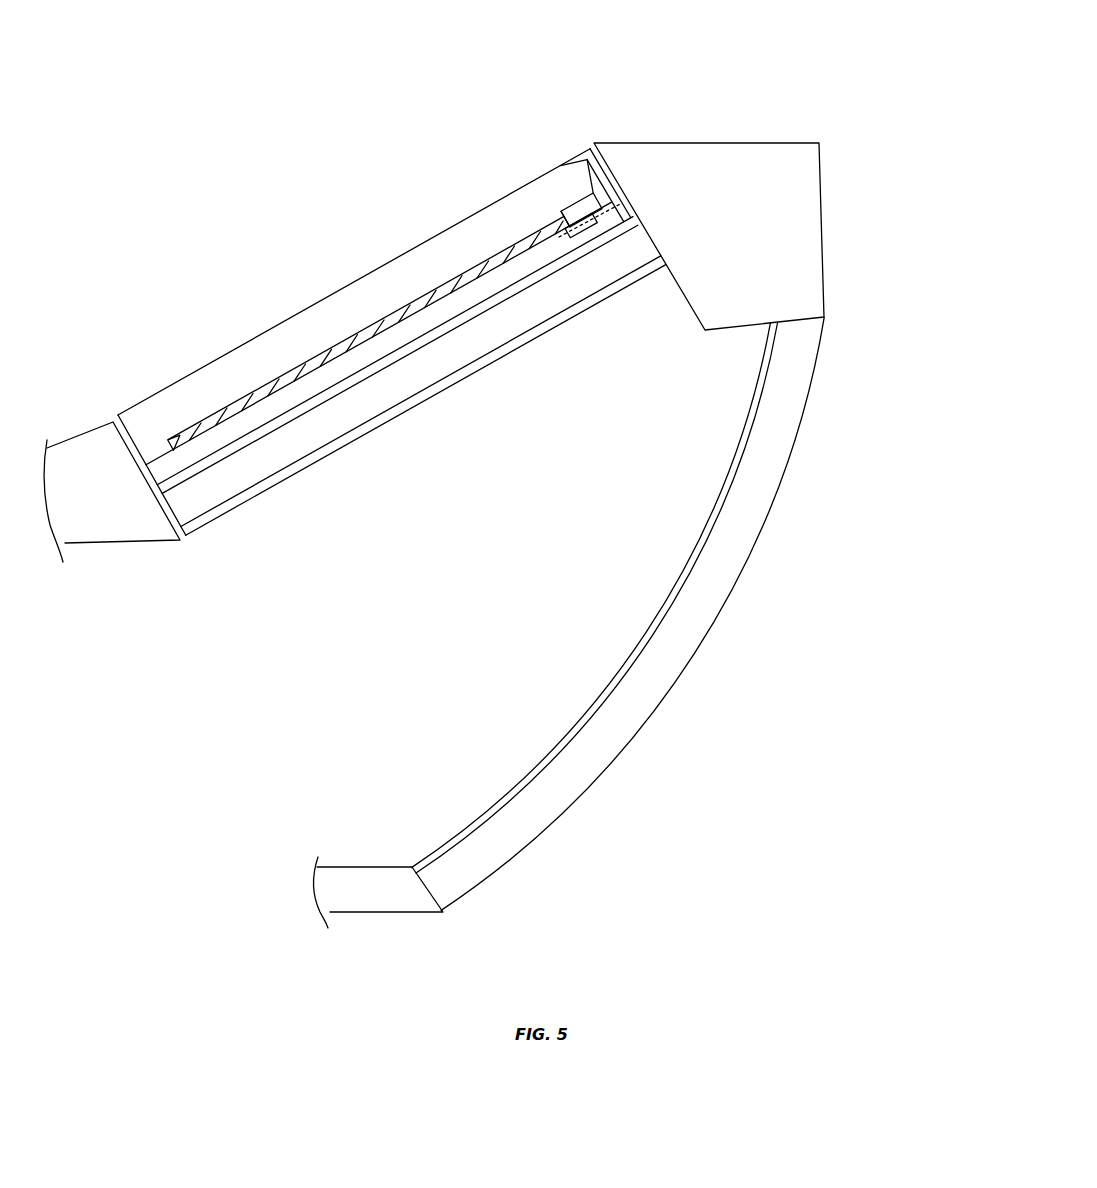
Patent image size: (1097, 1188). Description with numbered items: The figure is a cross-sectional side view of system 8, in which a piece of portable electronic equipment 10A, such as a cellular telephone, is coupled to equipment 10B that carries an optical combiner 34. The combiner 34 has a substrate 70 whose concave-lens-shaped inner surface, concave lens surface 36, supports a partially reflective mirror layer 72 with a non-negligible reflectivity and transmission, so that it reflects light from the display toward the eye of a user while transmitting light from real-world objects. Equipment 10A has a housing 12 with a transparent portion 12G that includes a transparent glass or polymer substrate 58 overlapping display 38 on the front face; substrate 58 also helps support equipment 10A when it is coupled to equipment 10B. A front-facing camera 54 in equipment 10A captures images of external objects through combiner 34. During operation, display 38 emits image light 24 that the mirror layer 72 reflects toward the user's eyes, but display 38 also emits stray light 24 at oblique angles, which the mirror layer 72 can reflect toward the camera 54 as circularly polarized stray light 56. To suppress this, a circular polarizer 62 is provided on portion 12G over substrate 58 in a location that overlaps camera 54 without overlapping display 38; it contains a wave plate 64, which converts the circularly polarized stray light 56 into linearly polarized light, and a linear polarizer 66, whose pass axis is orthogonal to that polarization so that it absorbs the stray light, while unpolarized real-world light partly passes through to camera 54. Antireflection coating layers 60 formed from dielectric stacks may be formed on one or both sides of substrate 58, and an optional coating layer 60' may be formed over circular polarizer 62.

The system 8 is at (800, 57).
The equipment 10A is at (410, 321).
The equipment 10B is at (685, 625).
The housing 12 is at (822, 228).
The transparent portion of housing 12G is at (212, 552).
The image light / stray light 24 is at (308, 388).
The optical combiner 34 is at (618, 629).
The concave lens surface 36 is at (636, 641).
The display 38 is at (222, 405).
The front-facing camera 54 is at (578, 203).
The circularly polarized stray light 56 is at (641, 331).
The substrate 58 is at (250, 478).
The antireflection coating layers 60 is at (409, 372).
The optional coating layer 60' is at (530, 300).
The circular polarizer 62 is at (627, 206).
The wave plate 64 is at (590, 242).
The linear polarizer 66 is at (597, 190).
The substrate 70 is at (575, 780).
The partially reflective mirror layer 72 is at (531, 770).